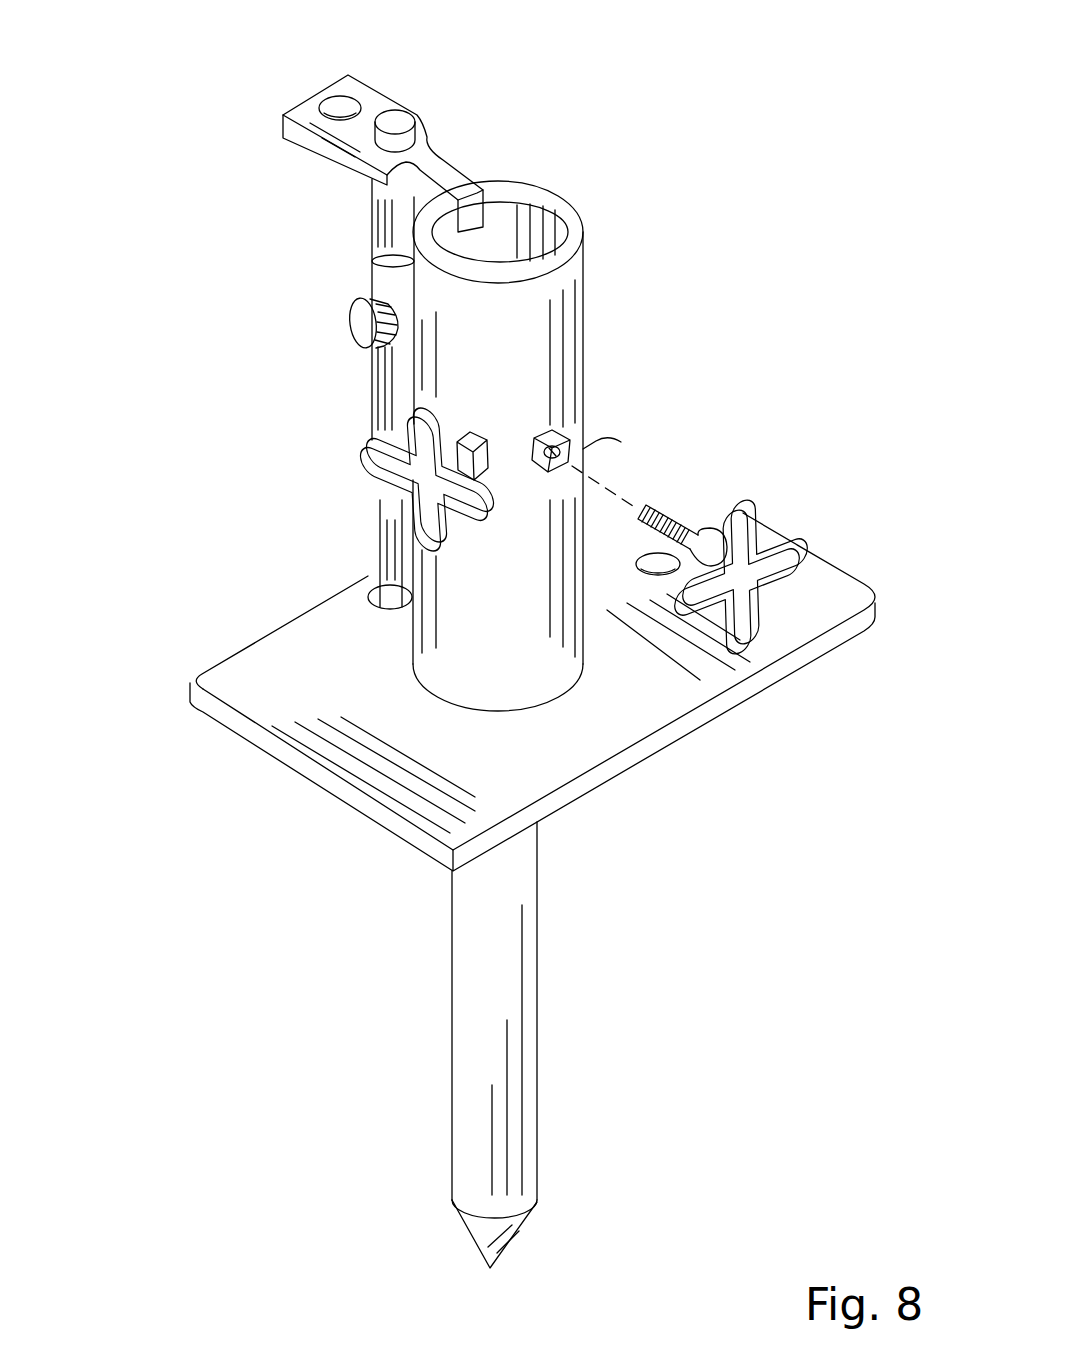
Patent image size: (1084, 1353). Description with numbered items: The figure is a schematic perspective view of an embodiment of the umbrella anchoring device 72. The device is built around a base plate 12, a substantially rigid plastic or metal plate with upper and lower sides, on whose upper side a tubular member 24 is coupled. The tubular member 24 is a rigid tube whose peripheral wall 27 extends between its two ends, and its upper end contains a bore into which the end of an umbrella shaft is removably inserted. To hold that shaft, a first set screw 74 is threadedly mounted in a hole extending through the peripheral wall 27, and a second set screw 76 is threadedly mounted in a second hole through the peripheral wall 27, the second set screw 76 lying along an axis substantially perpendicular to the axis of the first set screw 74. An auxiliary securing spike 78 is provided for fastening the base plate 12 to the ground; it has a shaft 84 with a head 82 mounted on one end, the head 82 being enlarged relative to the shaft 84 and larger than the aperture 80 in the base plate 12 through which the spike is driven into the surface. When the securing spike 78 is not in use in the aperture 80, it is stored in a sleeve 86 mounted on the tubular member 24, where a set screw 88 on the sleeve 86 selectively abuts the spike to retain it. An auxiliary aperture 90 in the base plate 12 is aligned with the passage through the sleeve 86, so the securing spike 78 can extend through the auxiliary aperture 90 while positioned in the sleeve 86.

The base plate 12 is at (313, 757).
The tubular member 24 is at (525, 683).
The peripheral wall 27 is at (590, 212).
The anchoring device 72 is at (673, 123).
The first set screw 74 is at (393, 465).
The second set screw 76 is at (790, 547).
The auxiliary securing spike 78 is at (267, 208).
The aperture 80 is at (655, 583).
The head 82 is at (403, 124).
The shaft 84 is at (393, 583).
The sleeve 86 is at (378, 388).
The set screw 88 is at (364, 326).
The auxiliary aperture 90 is at (377, 603).